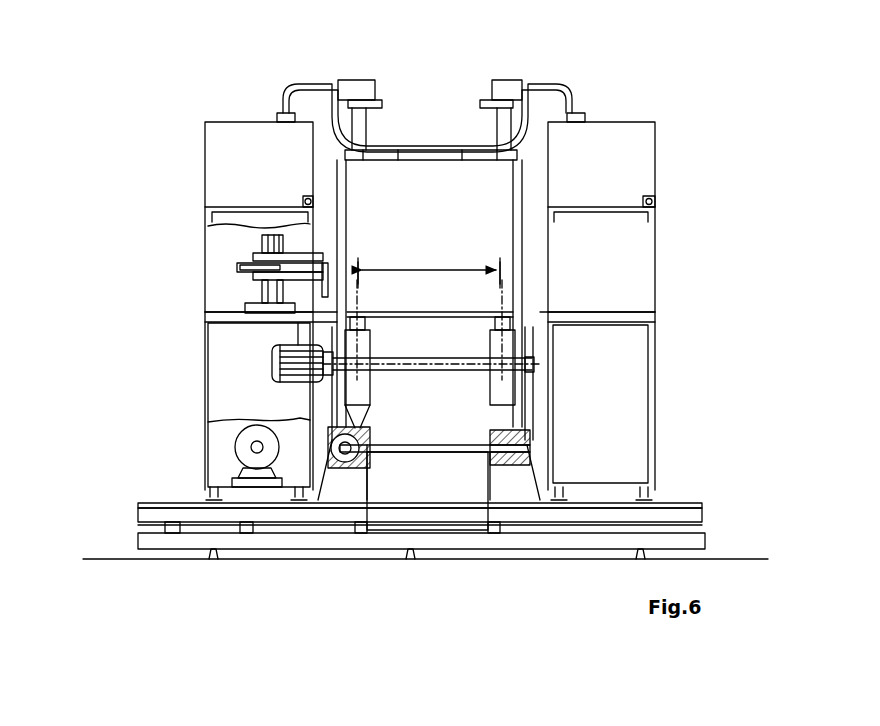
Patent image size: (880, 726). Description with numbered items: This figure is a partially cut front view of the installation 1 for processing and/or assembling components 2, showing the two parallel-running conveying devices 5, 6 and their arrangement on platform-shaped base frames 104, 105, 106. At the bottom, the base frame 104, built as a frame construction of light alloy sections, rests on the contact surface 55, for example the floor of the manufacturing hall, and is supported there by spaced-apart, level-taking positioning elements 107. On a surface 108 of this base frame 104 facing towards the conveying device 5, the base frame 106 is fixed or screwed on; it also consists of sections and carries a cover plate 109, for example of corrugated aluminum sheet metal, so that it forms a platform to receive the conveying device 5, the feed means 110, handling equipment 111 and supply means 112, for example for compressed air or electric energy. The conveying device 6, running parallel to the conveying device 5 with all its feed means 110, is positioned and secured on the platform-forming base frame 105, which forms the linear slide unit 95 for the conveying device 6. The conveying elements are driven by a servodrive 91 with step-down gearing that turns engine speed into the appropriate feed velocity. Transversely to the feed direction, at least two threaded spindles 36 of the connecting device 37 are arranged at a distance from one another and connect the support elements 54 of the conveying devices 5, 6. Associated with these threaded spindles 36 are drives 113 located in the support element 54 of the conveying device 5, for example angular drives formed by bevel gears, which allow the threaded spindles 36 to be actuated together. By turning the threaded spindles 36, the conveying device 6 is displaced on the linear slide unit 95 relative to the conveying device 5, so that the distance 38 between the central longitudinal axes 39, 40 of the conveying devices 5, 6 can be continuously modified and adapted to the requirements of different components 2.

The installation 1 is at (678, 98).
The components 2 is at (432, 317).
The conveying device 5 is at (360, 250).
The conveying device 6 is at (498, 262).
The threaded spindle 36 is at (432, 450).
The connecting device 37 is at (462, 437).
The distance 38 is at (425, 268).
The central longitudinal axis 39 is at (366, 282).
The central longitudinal axis 40 is at (499, 264).
The support elements 54 is at (348, 487).
The contact surface 55 is at (105, 558).
The servodrive 91 is at (278, 370).
The linear slide unit 95 is at (665, 487).
The base frame 104 is at (688, 543).
The base frame 105 is at (685, 517).
The base frame 106 is at (150, 512).
The positioning elements 107 is at (212, 560).
The surface 108 is at (320, 533).
The cover plate 109 is at (162, 503).
The feed means 110 is at (197, 158).
The handling equipment 111 is at (222, 282).
The supply means 112 is at (225, 447).
The drives 113 is at (358, 432).